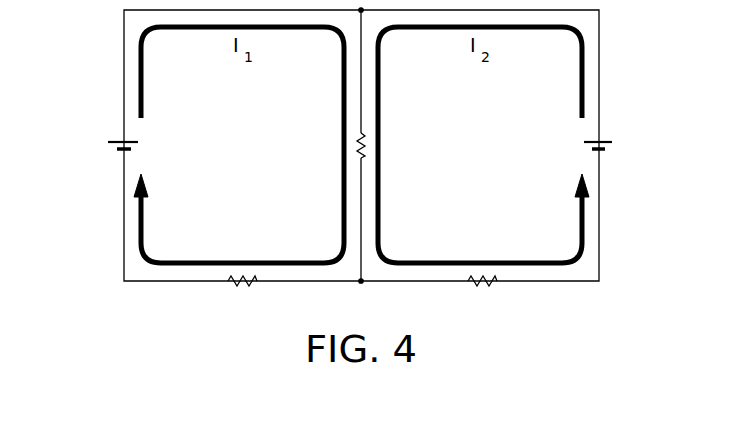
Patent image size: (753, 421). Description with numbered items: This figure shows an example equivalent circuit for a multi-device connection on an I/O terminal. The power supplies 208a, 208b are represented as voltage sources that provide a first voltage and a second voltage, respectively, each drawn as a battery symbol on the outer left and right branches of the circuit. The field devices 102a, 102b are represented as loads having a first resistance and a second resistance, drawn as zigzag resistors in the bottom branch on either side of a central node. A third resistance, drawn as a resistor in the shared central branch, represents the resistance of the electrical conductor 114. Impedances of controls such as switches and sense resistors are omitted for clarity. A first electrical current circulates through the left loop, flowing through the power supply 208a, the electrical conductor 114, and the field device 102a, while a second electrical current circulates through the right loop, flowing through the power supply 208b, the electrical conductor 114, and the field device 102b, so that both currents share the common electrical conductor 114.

The power supply 208a is at (110, 147).
The power supply 208b is at (612, 147).
The electrical conductor 114 is at (365, 145).
The field device 102a is at (238, 288).
The field device 102b is at (482, 288).